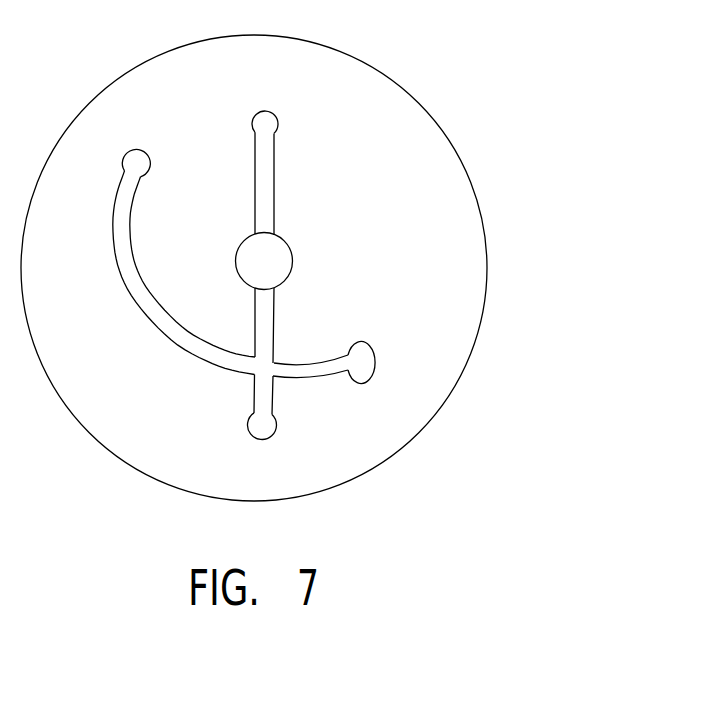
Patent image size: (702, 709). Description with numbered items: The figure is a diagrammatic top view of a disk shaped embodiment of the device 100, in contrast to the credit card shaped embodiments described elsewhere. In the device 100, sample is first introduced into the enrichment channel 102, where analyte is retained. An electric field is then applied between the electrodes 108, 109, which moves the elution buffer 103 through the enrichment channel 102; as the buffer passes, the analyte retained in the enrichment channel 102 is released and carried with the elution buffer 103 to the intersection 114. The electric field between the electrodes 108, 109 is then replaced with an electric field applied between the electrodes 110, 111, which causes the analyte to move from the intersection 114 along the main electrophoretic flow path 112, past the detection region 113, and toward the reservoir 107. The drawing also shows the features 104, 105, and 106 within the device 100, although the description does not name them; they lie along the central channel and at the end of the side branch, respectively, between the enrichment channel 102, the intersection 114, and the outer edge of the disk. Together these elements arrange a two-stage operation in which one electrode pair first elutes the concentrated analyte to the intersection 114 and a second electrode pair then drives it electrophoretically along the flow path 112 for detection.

The device 100 is at (487, 120).
The enrichment channel 102 is at (273, 255).
The elution buffer 103 is at (268, 122).
The second reservoir 104 is at (274, 428).
The main channel 105 is at (263, 308).
The third reservoir 106 is at (364, 369).
The reservoir 107 is at (139, 166).
The electrode 108 is at (265, 124).
The electrode 109 is at (260, 422).
The electrode 110 is at (360, 361).
The electrode 111 is at (155, 128).
The main electrophoretic flow path 112 is at (208, 350).
The detection region 113 is at (126, 266).
The intersection 114 is at (264, 366).